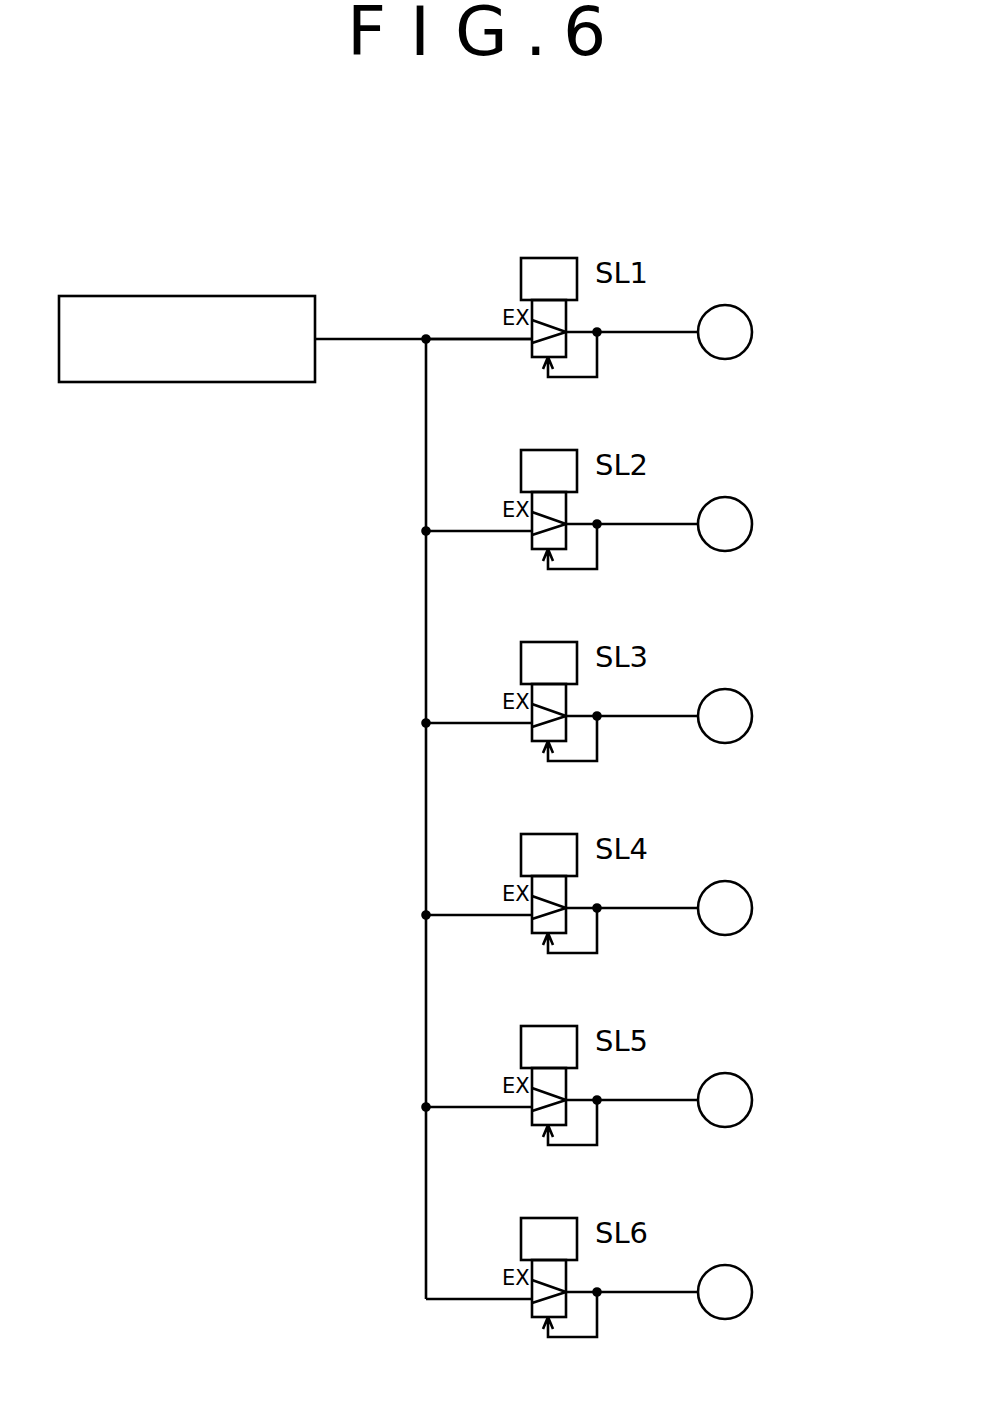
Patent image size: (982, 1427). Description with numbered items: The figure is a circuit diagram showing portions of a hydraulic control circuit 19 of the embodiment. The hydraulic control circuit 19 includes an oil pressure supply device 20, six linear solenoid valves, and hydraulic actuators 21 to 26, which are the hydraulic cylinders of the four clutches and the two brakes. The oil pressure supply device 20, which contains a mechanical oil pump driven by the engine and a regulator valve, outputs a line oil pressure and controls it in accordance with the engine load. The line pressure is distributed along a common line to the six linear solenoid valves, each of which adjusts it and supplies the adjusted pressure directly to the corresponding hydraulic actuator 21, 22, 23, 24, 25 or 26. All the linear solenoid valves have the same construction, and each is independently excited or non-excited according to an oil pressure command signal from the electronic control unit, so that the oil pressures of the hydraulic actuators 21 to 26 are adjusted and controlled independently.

The hydraulic control circuit 19 is at (691, 213).
The oil pressure supply device 20 is at (186, 296).
The hydraulic actuator 21 is at (735, 310).
The hydraulic actuator 22 is at (735, 502).
The hydraulic actuator 23 is at (735, 694).
The hydraulic actuator 24 is at (735, 886).
The hydraulic actuator 25 is at (735, 1078).
The hydraulic actuator 26 is at (735, 1270).